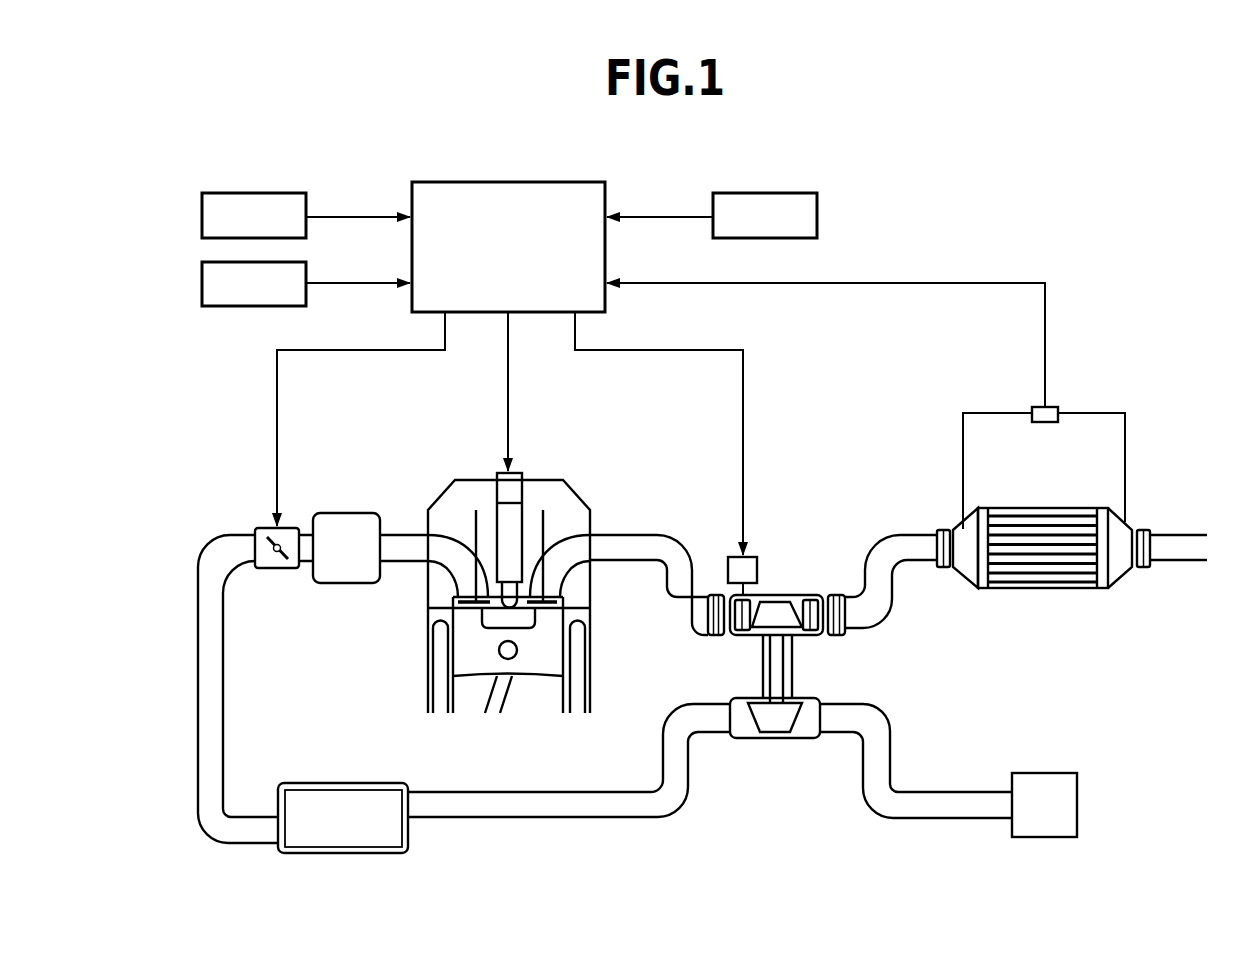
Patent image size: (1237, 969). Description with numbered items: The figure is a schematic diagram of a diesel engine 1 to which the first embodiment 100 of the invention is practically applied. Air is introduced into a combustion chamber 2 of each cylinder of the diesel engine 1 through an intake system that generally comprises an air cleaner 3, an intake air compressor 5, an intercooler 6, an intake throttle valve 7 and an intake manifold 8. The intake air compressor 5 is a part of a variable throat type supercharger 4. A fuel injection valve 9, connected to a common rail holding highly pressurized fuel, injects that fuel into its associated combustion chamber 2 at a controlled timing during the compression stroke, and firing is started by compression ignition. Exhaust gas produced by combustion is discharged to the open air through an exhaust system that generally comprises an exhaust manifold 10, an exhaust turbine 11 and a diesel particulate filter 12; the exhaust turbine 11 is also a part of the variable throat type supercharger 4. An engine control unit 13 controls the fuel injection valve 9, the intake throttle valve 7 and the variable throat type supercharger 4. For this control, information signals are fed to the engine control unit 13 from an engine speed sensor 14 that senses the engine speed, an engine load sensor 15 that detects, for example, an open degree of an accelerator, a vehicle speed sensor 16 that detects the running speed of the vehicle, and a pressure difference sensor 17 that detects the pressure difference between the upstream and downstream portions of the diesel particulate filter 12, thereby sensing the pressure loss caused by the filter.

The first embodiment 100 is at (1113, 198).
The diesel engine 1 is at (487, 557).
The combustion chamber 2 is at (494, 623).
The air cleaner 3 is at (1079, 805).
The variable throat type supercharger 4 is at (798, 665).
The intake air compressor 5 is at (773, 739).
The intercooler 6 is at (342, 782).
The intake throttle valve 7 is at (264, 527).
The intake manifold 8 is at (352, 512).
The fuel injection valve 9 is at (523, 515).
The exhaust manifold 10 is at (632, 534).
The exhaust turbine 11 is at (777, 595).
The diesel particulate filter 12 is at (1070, 507).
The engine control unit 13 is at (553, 181).
The engine speed sensor 14 is at (202, 216).
The engine load sensor 15 is at (202, 283).
The vehicle speed sensor 16 is at (817, 216).
The pressure difference sensor 17 is at (1047, 406).